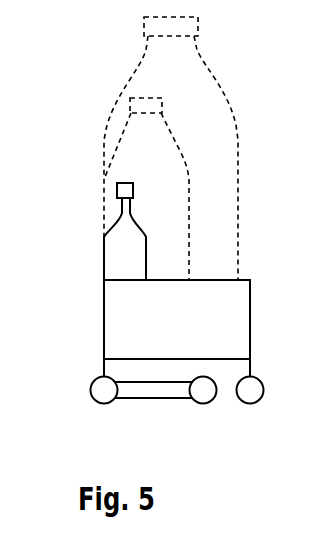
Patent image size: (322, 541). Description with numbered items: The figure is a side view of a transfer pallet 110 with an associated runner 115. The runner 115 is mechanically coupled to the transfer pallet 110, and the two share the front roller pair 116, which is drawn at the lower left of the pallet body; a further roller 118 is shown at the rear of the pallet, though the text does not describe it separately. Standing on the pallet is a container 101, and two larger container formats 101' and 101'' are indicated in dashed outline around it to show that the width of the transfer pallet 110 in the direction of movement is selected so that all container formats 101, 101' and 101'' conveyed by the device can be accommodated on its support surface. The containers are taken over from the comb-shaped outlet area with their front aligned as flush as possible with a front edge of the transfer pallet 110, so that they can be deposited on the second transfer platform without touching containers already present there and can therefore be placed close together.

The container format 101'' is at (135, 148).
The container format 101' is at (113, 189).
The container 101 is at (91, 231).
The transfer pallet 110 is at (198, 332).
The runner 115 is at (162, 398).
The front roller pair 116 is at (101, 404).
The right wheel 118 is at (254, 404).